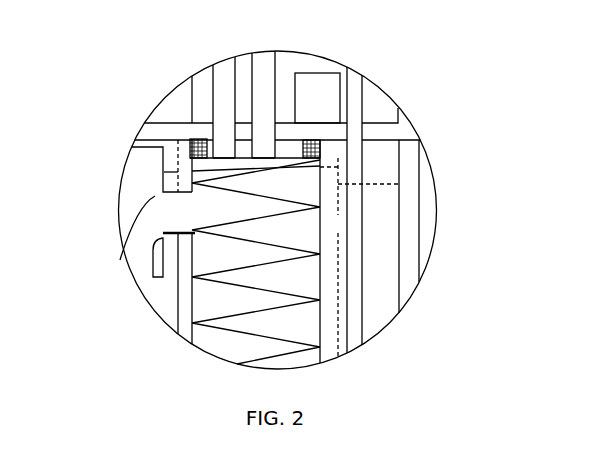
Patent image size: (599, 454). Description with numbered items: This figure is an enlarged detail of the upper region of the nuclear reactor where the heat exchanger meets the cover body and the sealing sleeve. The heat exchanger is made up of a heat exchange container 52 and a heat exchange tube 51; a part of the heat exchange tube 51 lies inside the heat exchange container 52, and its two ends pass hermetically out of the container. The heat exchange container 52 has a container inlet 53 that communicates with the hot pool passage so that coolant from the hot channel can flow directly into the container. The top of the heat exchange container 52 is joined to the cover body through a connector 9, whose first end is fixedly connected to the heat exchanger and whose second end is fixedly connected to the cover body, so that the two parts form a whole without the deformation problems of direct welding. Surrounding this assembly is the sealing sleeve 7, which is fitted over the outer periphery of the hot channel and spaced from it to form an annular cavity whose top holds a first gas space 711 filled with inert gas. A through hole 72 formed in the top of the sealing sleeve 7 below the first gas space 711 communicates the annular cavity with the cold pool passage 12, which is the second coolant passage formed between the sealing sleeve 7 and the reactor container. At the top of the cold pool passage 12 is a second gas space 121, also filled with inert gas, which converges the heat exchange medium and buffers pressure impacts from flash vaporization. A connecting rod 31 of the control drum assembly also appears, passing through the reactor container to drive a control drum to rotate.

The heat exchange tube 51 is at (214, 96).
The first gas space 711 is at (327, 147).
The second gas space 121 is at (378, 152).
The connector 9 is at (190, 141).
The container inlet 53 is at (190, 210).
The cold pool passage 12 is at (387, 217).
The through hole 72 is at (338, 225).
The connecting rod 31 is at (362, 290).
The sealing sleeve 7 is at (338, 318).
The heat exchange container 52 is at (190, 292).